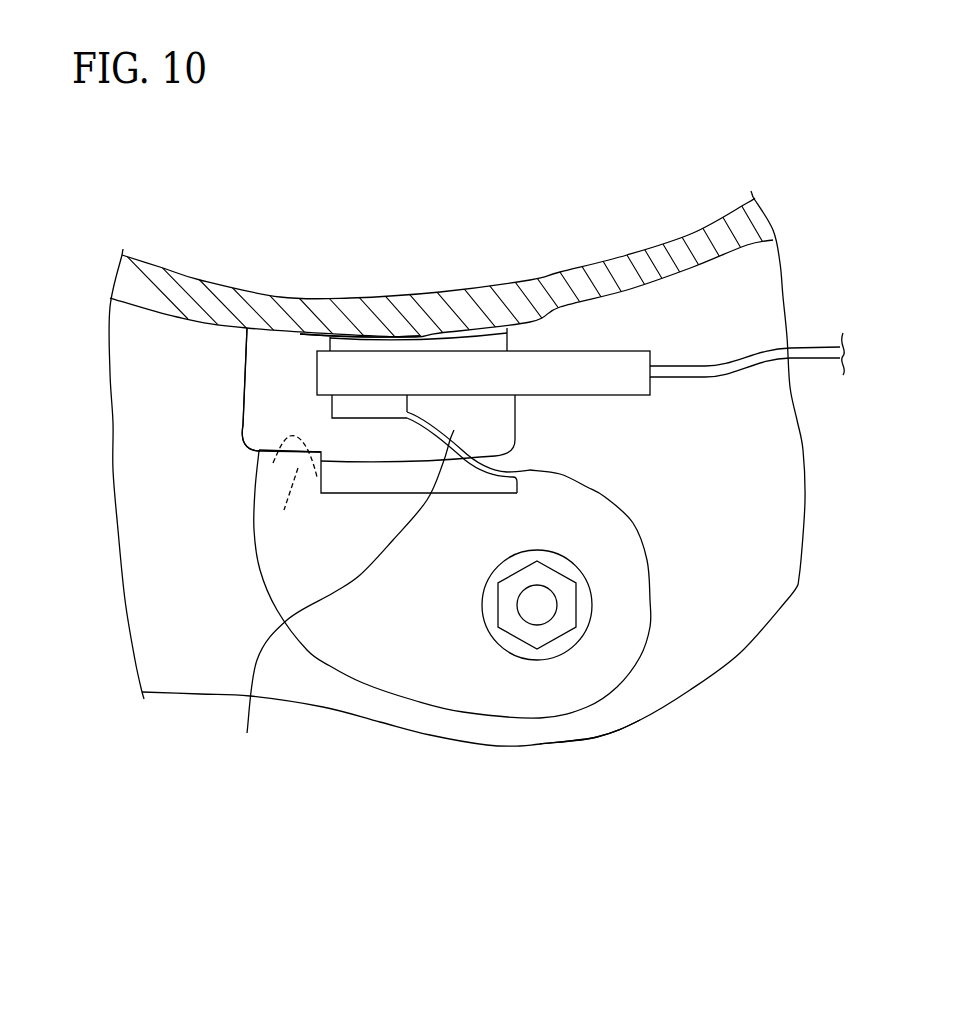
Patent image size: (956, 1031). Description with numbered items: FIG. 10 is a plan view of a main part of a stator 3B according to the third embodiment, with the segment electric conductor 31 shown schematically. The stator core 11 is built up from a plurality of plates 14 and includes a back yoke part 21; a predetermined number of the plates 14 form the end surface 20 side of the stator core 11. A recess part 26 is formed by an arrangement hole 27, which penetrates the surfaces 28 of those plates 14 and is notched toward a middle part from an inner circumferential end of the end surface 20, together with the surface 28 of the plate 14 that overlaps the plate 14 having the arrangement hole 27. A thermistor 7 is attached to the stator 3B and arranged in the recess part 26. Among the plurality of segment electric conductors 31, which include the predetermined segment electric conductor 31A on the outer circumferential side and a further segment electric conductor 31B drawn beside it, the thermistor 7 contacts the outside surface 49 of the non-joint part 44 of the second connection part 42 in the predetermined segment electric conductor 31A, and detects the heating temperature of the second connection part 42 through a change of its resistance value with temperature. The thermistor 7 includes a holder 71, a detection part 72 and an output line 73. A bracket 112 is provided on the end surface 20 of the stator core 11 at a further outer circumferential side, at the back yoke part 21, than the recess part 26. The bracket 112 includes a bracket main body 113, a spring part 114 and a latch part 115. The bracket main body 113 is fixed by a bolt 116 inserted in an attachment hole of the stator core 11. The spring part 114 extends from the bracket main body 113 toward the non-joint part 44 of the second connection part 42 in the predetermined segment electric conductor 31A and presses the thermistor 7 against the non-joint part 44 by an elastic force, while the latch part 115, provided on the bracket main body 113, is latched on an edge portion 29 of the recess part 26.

The stator 3B is at (177, 727).
The thermistor 7 is at (297, 371).
The stator core 11 is at (370, 731).
The plate 14 is at (751, 657).
The end surface 20 is at (322, 702).
The back yoke part 21 is at (153, 645).
The recess part 26 is at (63, 432).
The arrangement hole 27 is at (250, 434).
The surface 28 is at (260, 403).
The edge portion 29 is at (273, 463).
The segment electric conductor 31 is at (453, 250).
The predetermined segment electric conductor 31A is at (546, 270).
The second cover layer 31B is at (249, 286).
The second connection part 42 is at (366, 237).
The non-joint part 44 is at (357, 310).
The outside surface 49 is at (463, 337).
The holder 71 is at (583, 357).
The detection part 72 is at (367, 342).
The output line 73 is at (803, 357).
The bracket 112 is at (490, 729).
The bracket main body 113 is at (652, 613).
The spring part 114 is at (340, 599).
The latch part 115 is at (253, 547).
The bolt 116 is at (557, 630).